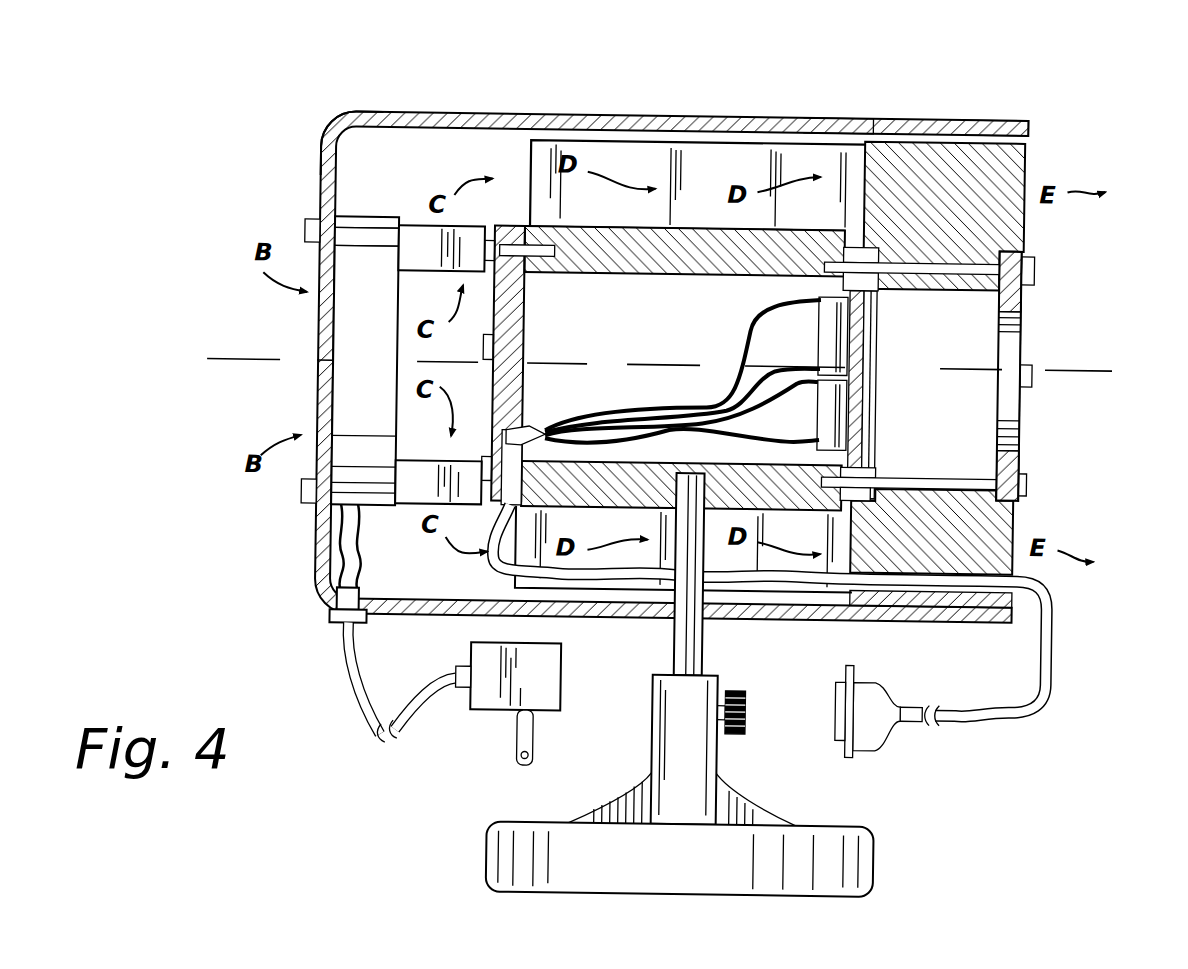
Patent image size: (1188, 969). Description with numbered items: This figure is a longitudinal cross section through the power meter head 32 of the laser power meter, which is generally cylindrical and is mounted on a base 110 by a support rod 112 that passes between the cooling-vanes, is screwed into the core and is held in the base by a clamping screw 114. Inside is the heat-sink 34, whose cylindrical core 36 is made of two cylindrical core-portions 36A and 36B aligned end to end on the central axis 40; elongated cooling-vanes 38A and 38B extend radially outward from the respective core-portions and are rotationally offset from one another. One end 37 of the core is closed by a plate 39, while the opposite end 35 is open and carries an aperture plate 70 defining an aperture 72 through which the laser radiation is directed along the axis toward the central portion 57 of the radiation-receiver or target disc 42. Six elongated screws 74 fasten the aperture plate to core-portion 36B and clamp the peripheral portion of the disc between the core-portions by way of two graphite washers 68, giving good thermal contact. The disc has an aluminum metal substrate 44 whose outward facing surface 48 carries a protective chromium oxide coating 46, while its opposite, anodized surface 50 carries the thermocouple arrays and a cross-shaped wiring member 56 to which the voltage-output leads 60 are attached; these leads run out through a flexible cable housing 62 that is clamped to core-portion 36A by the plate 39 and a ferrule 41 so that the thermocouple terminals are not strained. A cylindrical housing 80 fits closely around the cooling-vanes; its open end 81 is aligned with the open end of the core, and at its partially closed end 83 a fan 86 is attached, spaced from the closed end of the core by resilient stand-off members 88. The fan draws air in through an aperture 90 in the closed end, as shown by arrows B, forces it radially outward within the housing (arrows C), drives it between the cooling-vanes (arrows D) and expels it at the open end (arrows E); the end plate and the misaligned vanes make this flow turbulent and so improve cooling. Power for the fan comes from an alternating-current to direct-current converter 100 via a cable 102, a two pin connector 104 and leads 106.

The power meter head 32 is at (611, 683).
The heat-sink 34 is at (832, 144).
The open end 35 is at (973, 250).
The cylindrical core 36 is at (691, 226).
The core-portion 36A is at (632, 275).
The core-portion 36B is at (1020, 237).
The closed end 37 is at (548, 276).
The cooling-vanes 38A is at (636, 158).
The cooling-vanes 38B is at (1026, 157).
The plate 39 is at (516, 246).
The central axis 40 is at (1082, 367).
The ferrule 41 is at (508, 458).
The target disc 42 is at (888, 326).
The metal substrate 44 is at (862, 331).
The non-metallic coating 46 is at (872, 412).
The outward facing surface 48 is at (872, 397).
The opposite surface 50 is at (792, 299).
The cross-shaped wiring member 56 is at (814, 316).
The central portion 57 is at (900, 352).
The voltage-output leads 60 is at (762, 432).
The flexible cable housing 62 is at (826, 595).
The graphite washers 68 is at (858, 257).
The aperture plate 70 is at (1022, 292).
The aperture 72 is at (1025, 315).
The screws 74 is at (1035, 266).
The cylindrical housing 80 is at (438, 111).
The open end 81 is at (1002, 124).
The partially closed end 83 is at (317, 146).
The fan 86 is at (370, 238).
The resilient stand-off members 88 is at (421, 233).
The aperture 90 is at (332, 334).
The power supply 100 is at (556, 670).
The cable 102 is at (348, 705).
The two pin connector 104 is at (330, 625).
The leads 106 is at (350, 546).
The base 110 is at (800, 812).
The support rod 112 is at (708, 634).
The clamping screw 114 is at (752, 711).